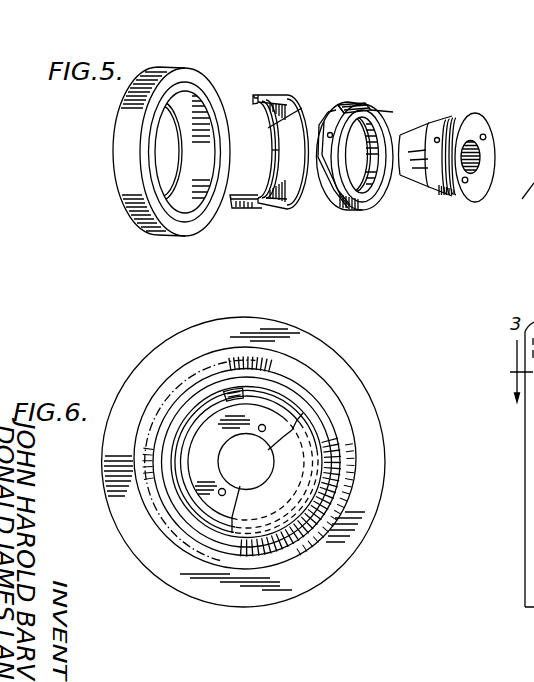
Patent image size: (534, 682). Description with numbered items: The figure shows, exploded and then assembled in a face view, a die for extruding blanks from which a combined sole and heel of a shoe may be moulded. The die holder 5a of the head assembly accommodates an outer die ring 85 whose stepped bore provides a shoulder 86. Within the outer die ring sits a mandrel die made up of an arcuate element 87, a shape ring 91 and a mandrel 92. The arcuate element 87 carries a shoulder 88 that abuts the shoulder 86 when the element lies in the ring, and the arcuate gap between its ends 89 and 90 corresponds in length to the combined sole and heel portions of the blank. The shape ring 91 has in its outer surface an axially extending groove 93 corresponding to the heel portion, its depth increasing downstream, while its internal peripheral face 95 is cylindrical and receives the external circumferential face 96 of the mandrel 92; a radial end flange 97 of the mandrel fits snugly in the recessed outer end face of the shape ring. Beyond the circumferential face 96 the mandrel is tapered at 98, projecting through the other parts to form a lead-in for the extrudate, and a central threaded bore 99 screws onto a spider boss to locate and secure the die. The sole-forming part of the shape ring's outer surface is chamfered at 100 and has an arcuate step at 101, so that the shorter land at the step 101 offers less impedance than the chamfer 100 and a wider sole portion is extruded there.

In FIG. 5, the outer die ring 85 is at (167, 82).
In FIG. 6, the outer die ring 85 is at (337, 412).
In FIG. 5, the shoulder 86 is at (183, 190).
In FIG. 5, the arcuate element 87 is at (287, 190).
In FIG. 6, the arcuate element 87 is at (282, 397).
In FIG. 5, the shoulder 88 is at (329, 116).
In FIG. 5, the end of the arcuate element 89 is at (256, 102).
In FIG. 5, the end of the arcuate element 90 is at (250, 196).
In FIG. 5, the shape ring 91 is at (359, 212).
In FIG. 6, the shape ring 91 is at (197, 413).
In FIG. 5, the mandrel 92 is at (493, 126).
In FIG. 5, the axially extending groove 93 is at (372, 108).
In FIG. 6, the axially extending groove 93 is at (224, 394).
In FIG. 5, the internal peripheral face 95 is at (386, 112).
In FIG. 5, the external circumferential face 96 is at (453, 124).
In FIG. 5, the radial end flange 97 is at (443, 193).
In FIG. 6, the radial end flange 97 is at (208, 502).
In FIG. 5, the tapered portion 98 is at (424, 131).
In FIG. 5, the central threaded bore 99 is at (472, 165).
In FIG. 5, the chamfer 100 is at (353, 106).
In FIG. 5, the arcuate step 101 is at (340, 178).
In FIG. 6, the die holder 5a is at (332, 362).